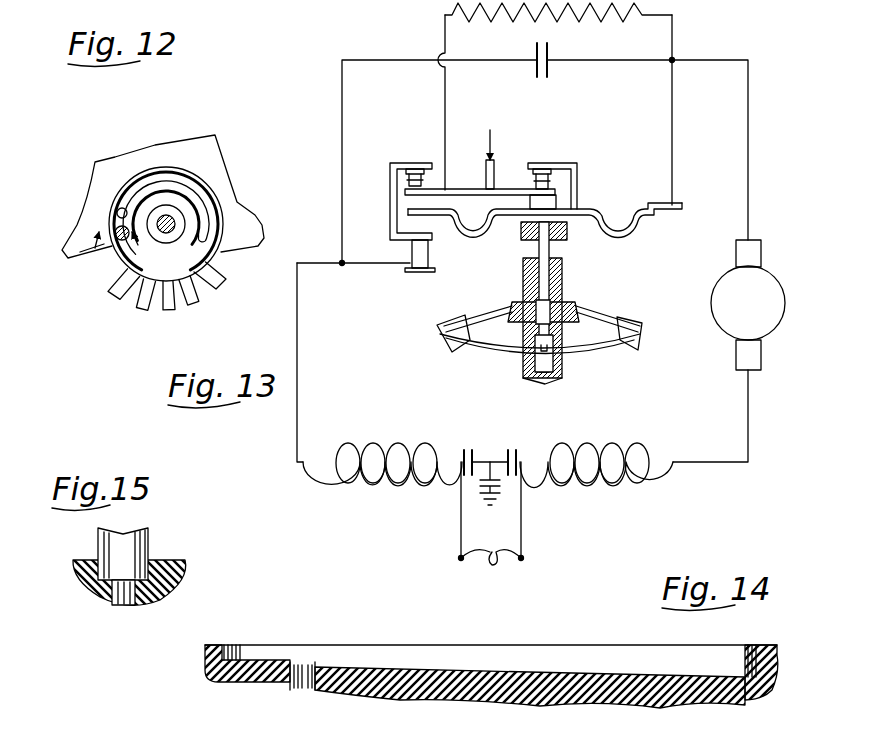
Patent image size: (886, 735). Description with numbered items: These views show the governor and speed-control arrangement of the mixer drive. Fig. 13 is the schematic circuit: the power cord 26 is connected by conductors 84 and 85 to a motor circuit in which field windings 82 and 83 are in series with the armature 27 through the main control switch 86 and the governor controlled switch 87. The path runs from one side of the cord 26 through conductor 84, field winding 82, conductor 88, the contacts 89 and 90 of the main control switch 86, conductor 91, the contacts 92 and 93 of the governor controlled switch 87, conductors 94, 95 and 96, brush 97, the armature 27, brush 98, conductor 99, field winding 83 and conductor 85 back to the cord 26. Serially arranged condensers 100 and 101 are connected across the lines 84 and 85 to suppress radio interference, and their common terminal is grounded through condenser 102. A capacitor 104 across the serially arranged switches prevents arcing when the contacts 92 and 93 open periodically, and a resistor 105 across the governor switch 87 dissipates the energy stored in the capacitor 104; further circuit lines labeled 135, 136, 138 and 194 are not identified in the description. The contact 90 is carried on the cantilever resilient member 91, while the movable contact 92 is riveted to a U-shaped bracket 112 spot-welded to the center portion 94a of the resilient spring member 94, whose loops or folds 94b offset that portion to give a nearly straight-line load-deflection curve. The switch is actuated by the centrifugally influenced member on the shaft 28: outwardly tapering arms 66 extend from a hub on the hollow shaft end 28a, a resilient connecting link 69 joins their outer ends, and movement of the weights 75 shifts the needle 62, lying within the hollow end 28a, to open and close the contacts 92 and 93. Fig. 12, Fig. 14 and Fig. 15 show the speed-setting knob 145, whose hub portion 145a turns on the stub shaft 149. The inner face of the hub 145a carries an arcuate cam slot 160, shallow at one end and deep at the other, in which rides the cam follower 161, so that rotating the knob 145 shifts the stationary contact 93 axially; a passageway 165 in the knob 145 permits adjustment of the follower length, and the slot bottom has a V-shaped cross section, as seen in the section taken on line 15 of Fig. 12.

In FIG. 12, the section line 15 is at (119, 252).
In FIG. 13, the power attachment cord 26 is at (488, 564).
In FIG. 13, the armature 27 is at (748, 303).
In FIG. 13, the shaft 28 is at (562, 372).
In FIG. 13, the hollow end of shaft 28a is at (563, 274).
In FIG. 13, the needle 62 is at (538, 244).
In FIG. 13, the arms 66 is at (498, 313).
In FIG. 13, the resilient connecting link 69 is at (578, 344).
In FIG. 13, the weights 75 is at (440, 345).
In FIG. 13, the field winding 82 is at (372, 446).
In FIG. 13, the field winding 83 is at (616, 446).
In FIG. 13, the conductor 84 is at (460, 532).
In FIG. 13, the conductor 85 is at (522, 530).
In FIG. 13, the main control switch 86 is at (420, 158).
In FIG. 13, the governor controlled switch 87 is at (560, 160).
In FIG. 13, the conductor 88 is at (400, 264).
In FIG. 13, the stationary contact 89 is at (406, 172).
In FIG. 13, the movable contact 90 is at (407, 188).
In FIG. 13, the cantilever mounted resilient member 91 is at (470, 198).
In FIG. 13, the movable contact 92 is at (530, 172).
In FIG. 13, the stationary contact 93 is at (552, 182).
In FIG. 13, the resilient member 94 is at (656, 216).
In FIG. 13, the center portion 94a is at (566, 222).
In FIG. 13, the loops or folds 94b is at (448, 232).
In FIG. 13, the conductor 95 is at (674, 152).
In FIG. 13, the conductor 96 is at (750, 142).
In FIG. 13, the brush 97 is at (761, 252).
In FIG. 13, the brush 98 is at (761, 353).
In FIG. 13, the conductor 99 is at (749, 448).
In FIG. 13, the condenser 100 is at (464, 448).
In FIG. 13, the condenser 101 is at (518, 448).
In FIG. 13, the condenser 102 is at (478, 492).
In FIG. 13, the capacitor 104 is at (535, 72).
In FIG. 13, the resistor 105 is at (565, 14).
In FIG. 13, the U-shaped bracket 112 is at (557, 201).
In FIG. 13, the conductor 135 is at (672, 38).
In FIG. 13, the conductor 136 is at (445, 36).
In FIG. 13, the conductor 138 is at (343, 102).
In FIG. 12, the knob 145 is at (226, 160).
In FIG. 12, the central hub portion 145a is at (180, 160).
In FIG. 15, the central hub portion 145a is at (98, 598).
In FIG. 14, the central hub portion 145a is at (640, 706).
In FIG. 12, the stub shaft 149 is at (160, 205).
In FIG. 12, the arcuate cam slot 160 is at (210, 215).
In FIG. 15, the arcuate cam slot 160 is at (100, 555).
In FIG. 14, the arcuate cam slot 160 is at (512, 656).
In FIG. 12, the cam follower 161 is at (127, 240).
In FIG. 15, the cam follower 161 is at (149, 534).
In FIG. 12, the passageway 165 is at (120, 209).
In FIG. 15, the passageway 165 is at (124, 605).
In FIG. 14, the passageway 165 is at (305, 692).
In FIG. 13, the conductor 194 is at (596, 62).